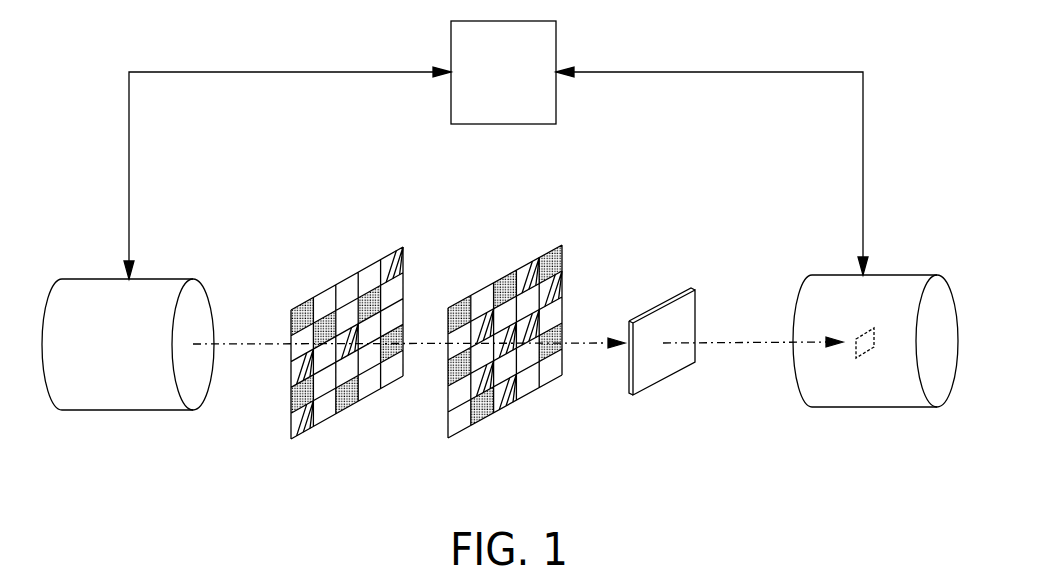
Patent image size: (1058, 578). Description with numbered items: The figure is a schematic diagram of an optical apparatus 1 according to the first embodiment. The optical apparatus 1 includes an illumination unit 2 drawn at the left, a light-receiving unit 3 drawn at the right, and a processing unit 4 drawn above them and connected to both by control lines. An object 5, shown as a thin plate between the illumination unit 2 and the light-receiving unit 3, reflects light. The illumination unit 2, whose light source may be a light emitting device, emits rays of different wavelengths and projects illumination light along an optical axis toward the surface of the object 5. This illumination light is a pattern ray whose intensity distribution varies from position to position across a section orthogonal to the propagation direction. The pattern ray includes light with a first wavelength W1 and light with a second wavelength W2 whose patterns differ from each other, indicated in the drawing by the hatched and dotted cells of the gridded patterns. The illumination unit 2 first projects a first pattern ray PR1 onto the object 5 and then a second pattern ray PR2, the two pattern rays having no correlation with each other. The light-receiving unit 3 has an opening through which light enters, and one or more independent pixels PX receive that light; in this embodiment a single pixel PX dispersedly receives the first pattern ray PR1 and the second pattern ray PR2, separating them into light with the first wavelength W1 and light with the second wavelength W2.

The optical apparatus 1 is at (803, 481).
The illumination unit 2 is at (166, 279).
The light-receiving unit 3 is at (906, 275).
The processing unit 4 is at (556, 31).
The object 5 is at (677, 292).
The first pattern ray PR1 is at (525, 236).
The second pattern ray PR2 is at (355, 238).
The light with a first wavelength W1 is at (307, 427).
The light with a second wavelength W2 is at (352, 398).
The pixel PX is at (865, 355).